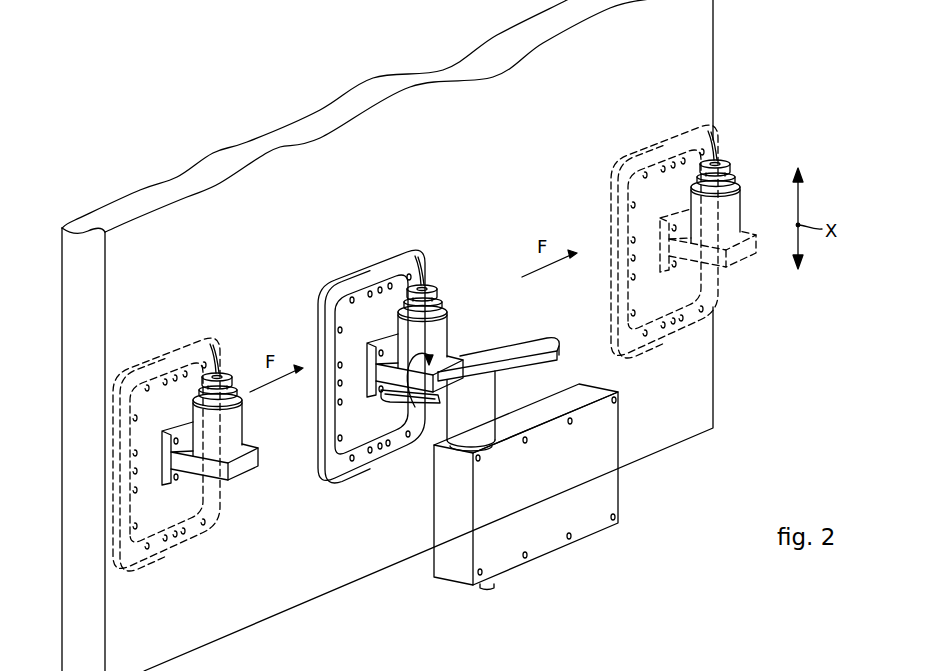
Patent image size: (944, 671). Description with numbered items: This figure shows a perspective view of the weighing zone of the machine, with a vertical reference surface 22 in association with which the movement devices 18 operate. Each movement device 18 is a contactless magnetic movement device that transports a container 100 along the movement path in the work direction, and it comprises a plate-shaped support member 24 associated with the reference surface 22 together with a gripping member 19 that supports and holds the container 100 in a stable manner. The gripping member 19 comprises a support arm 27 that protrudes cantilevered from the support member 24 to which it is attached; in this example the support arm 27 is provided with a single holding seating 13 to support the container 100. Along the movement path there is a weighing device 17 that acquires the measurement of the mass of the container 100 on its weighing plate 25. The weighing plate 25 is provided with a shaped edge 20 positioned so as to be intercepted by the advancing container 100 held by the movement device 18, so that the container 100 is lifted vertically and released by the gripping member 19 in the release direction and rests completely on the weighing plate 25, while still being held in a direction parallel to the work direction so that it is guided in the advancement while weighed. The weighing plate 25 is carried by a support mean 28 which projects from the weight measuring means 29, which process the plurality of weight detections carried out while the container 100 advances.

The reference surface 22 is at (703, 33).
The movement device 18 is at (420, 253).
The support member 24 is at (345, 309).
The container 100 is at (445, 290).
The gripping member 19 is at (457, 355).
The support arm 27 is at (395, 375).
The weighing plate 25 is at (510, 343).
The holding seating 13 is at (427, 402).
The shaped edge 20 is at (415, 407).
The support mean 28 is at (478, 428).
The weighing device 17 is at (640, 497).
The weight measuring means 29 is at (451, 569).